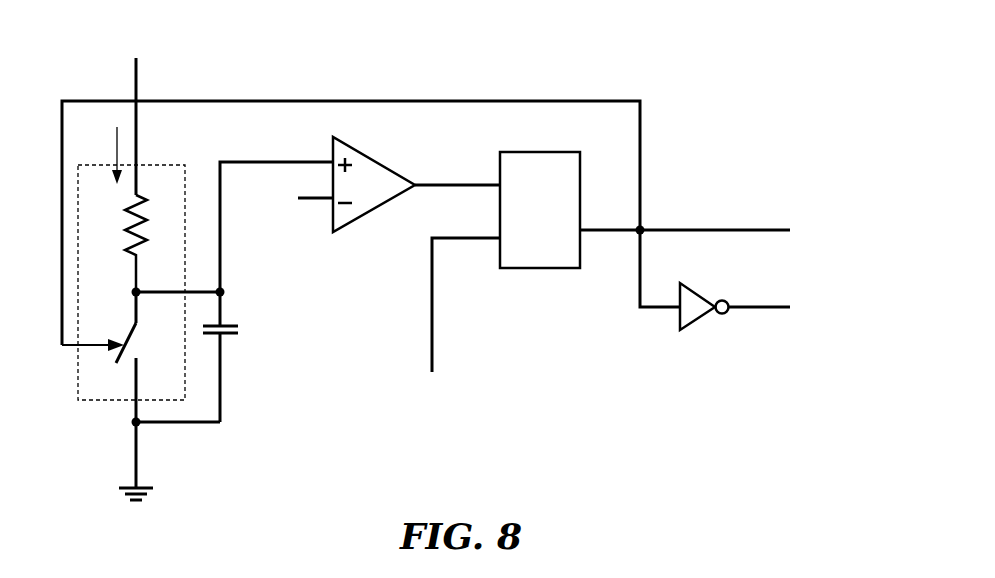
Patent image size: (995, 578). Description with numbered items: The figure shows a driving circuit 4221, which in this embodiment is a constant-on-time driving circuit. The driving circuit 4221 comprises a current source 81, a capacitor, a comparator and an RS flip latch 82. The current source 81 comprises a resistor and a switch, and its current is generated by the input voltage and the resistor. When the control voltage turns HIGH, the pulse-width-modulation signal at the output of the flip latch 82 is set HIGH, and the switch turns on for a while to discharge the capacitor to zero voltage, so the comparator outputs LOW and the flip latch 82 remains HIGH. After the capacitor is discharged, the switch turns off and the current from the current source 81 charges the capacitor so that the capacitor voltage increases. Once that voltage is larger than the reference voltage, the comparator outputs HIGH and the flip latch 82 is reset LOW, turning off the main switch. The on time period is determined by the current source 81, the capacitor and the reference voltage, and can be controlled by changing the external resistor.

The driving circuit 4221 is at (437, 267).
The current source 81 is at (183, 165).
The RS flip latch 82 is at (580, 152).